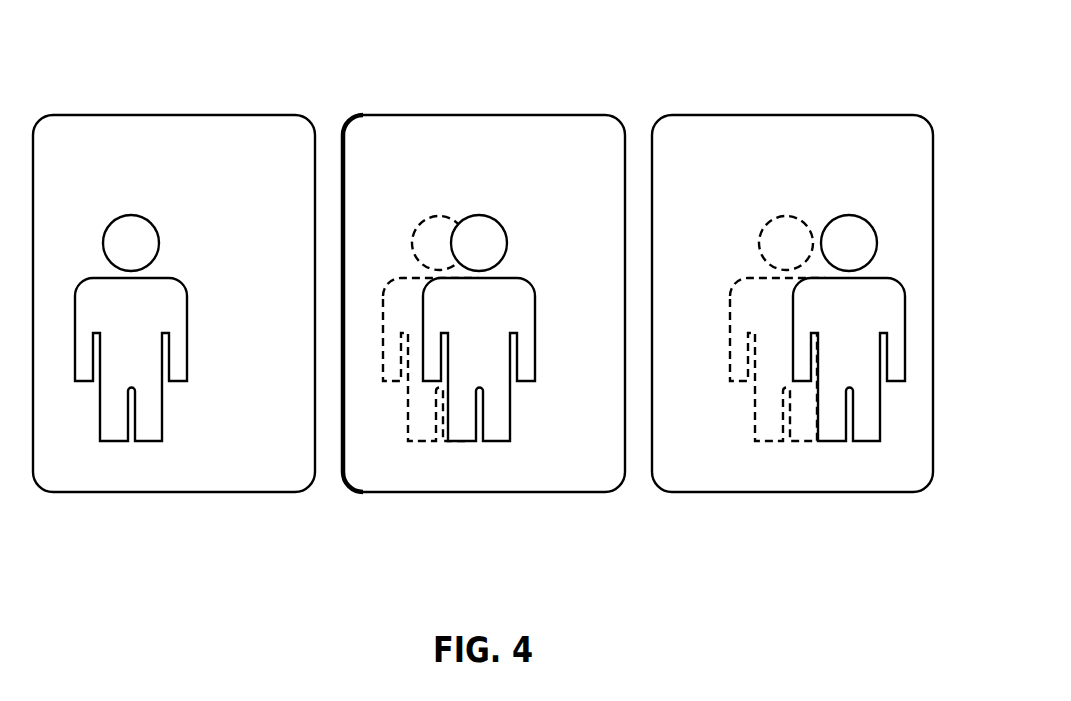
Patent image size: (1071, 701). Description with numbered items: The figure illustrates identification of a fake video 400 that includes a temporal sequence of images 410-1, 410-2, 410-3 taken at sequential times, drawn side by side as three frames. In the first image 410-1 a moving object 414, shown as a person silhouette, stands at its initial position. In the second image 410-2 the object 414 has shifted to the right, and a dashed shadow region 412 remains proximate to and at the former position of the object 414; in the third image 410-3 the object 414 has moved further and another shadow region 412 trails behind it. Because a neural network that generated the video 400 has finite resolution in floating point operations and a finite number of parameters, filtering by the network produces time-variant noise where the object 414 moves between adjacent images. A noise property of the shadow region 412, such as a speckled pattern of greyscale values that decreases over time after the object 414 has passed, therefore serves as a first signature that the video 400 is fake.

The video 400 is at (867, 29).
The image 410-1 is at (147, 172).
The image 410-2 is at (457, 172).
The image 410-3 is at (766, 172).
The shadow region 412 is at (408, 312).
The moving object 414 is at (145, 313).